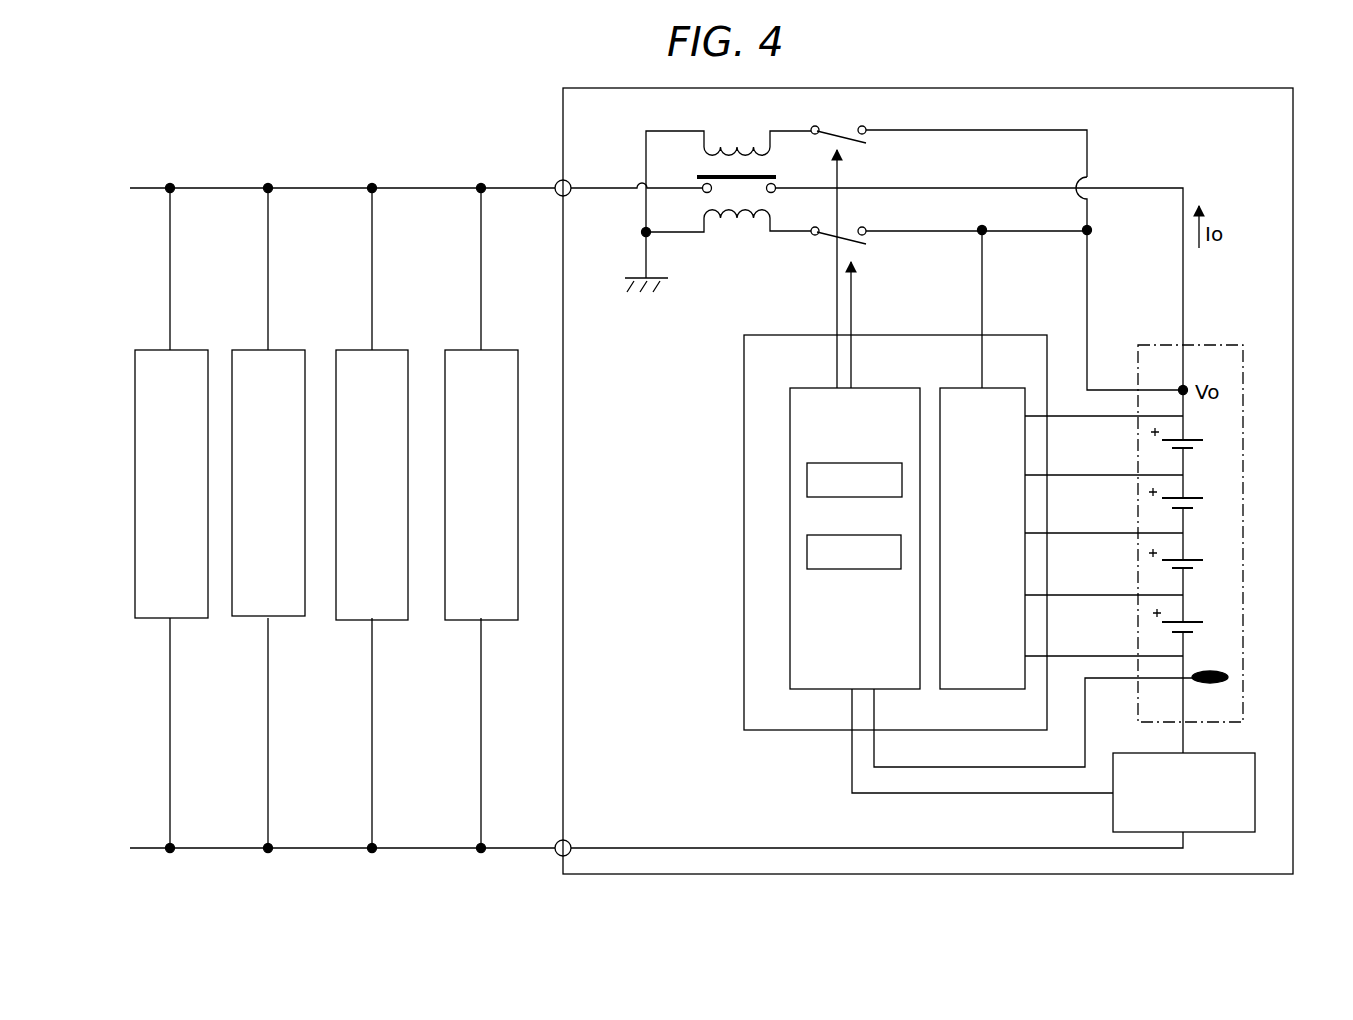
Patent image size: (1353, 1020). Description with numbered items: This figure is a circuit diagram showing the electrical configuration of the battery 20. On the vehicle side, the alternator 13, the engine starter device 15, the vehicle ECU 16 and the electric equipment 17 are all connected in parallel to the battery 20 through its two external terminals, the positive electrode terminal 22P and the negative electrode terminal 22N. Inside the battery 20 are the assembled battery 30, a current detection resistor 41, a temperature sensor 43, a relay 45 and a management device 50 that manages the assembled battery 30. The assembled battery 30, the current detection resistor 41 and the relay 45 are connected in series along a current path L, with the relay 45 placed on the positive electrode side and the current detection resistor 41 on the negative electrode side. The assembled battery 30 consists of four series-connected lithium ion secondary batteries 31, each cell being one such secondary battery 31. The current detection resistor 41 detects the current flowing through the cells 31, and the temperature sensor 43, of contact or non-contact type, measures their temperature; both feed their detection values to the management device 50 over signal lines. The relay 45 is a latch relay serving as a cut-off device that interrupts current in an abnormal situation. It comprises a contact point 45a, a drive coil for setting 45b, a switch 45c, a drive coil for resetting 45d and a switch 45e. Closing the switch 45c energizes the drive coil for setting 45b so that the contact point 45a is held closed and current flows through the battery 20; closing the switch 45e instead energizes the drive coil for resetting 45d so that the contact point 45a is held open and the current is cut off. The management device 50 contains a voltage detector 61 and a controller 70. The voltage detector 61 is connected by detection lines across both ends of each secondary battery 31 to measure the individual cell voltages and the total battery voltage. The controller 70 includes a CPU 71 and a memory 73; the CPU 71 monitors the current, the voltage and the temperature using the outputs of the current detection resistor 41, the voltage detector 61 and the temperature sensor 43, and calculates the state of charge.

The alternator 13 is at (188, 350).
The engine starter device 15 is at (295, 350).
The vehicle ECU 16 is at (393, 350).
The electric equipment 17 is at (490, 350).
The battery 20 is at (1294, 143).
The positive electrode terminal 22P is at (560, 181).
The negative electrode terminal 22N is at (556, 856).
The assembled battery 30 is at (1201, 344).
The lithium ion secondary battery 31 is at (1192, 440).
The current detection resistor 41 is at (1250, 753).
The temperature sensor 43 is at (1212, 671).
The relay 45 is at (837, 173).
The contact point 45a is at (753, 175).
The drive coil for setting 45b is at (733, 226).
The switch 45c is at (837, 243).
The drive coil for resetting 45d is at (739, 135).
The switch 45e is at (842, 138).
The management device 50 is at (744, 372).
The voltage detector 61 is at (993, 388).
The controller 70 is at (790, 638).
The CPU 71 is at (807, 482).
The memory 73 is at (807, 553).
The current path L is at (910, 188).